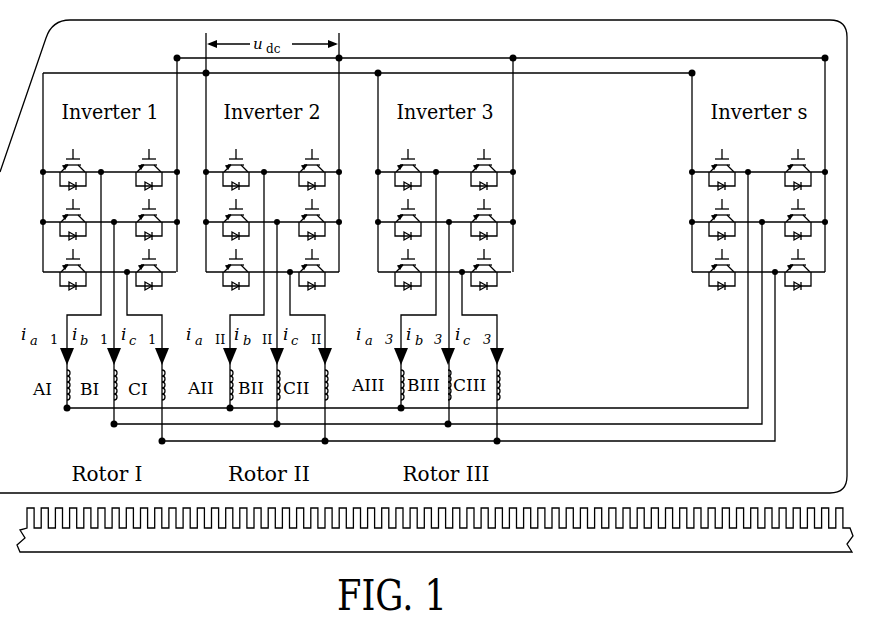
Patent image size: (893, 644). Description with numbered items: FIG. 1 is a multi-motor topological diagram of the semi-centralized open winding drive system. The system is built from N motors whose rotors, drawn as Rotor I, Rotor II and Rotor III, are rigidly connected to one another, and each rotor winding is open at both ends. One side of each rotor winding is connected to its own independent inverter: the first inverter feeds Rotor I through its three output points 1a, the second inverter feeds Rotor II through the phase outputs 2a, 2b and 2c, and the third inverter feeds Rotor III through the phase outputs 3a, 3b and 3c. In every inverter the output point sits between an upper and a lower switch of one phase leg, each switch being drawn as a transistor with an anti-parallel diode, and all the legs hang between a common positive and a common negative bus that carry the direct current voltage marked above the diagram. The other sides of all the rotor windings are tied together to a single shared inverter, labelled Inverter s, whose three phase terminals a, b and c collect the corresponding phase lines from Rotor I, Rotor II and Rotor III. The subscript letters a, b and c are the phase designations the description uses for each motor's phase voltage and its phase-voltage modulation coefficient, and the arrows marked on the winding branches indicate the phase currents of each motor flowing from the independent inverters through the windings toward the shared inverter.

The output node of inverter 1 1a is at (114, 294).
The phase a output node of inverter 2 2a is at (255, 278).
The phase b output node of inverter 2 2b is at (283, 311).
The phase c output node of inverter 2 2c is at (304, 344).
The phase a output node of inverter 3 3a is at (427, 278).
The phase b output node of inverter 3 3b is at (455, 311).
The phase c output node of inverter 3 3c is at (476, 344).
The a phase a is at (411, 277).
The b phase b is at (442, 310).
The c phase c is at (471, 344).